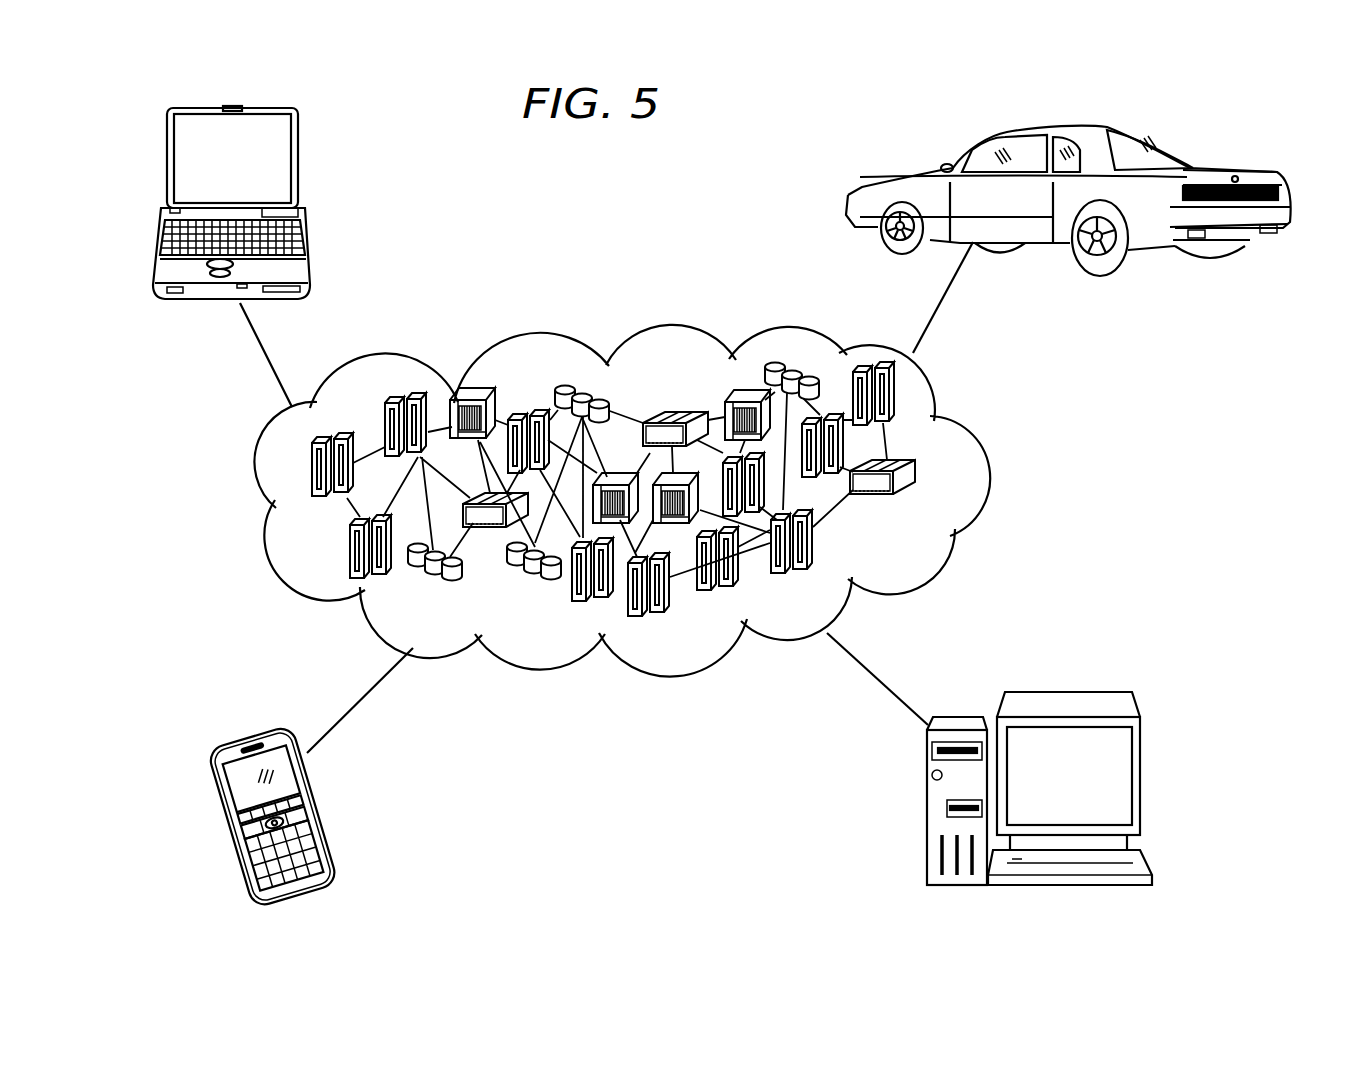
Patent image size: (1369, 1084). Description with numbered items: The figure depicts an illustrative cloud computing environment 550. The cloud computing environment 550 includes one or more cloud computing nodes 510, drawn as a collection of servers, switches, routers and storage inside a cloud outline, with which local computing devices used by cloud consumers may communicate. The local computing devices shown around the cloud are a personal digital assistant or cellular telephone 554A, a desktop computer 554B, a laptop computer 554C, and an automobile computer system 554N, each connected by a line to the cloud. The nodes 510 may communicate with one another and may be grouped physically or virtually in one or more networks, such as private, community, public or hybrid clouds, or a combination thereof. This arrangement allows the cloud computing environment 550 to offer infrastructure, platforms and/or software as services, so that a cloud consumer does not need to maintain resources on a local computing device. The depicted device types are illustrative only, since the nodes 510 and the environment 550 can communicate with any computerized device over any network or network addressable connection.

The cloud computing environment 550 is at (966, 418).
The cloud computing nodes 510 is at (920, 502).
The personal digital assistant (PDA) or cellular telephone 554A is at (210, 800).
The desktop computer 554B is at (1068, 686).
The laptop computer 554C is at (163, 152).
The automobile computer system 554N is at (1243, 175).